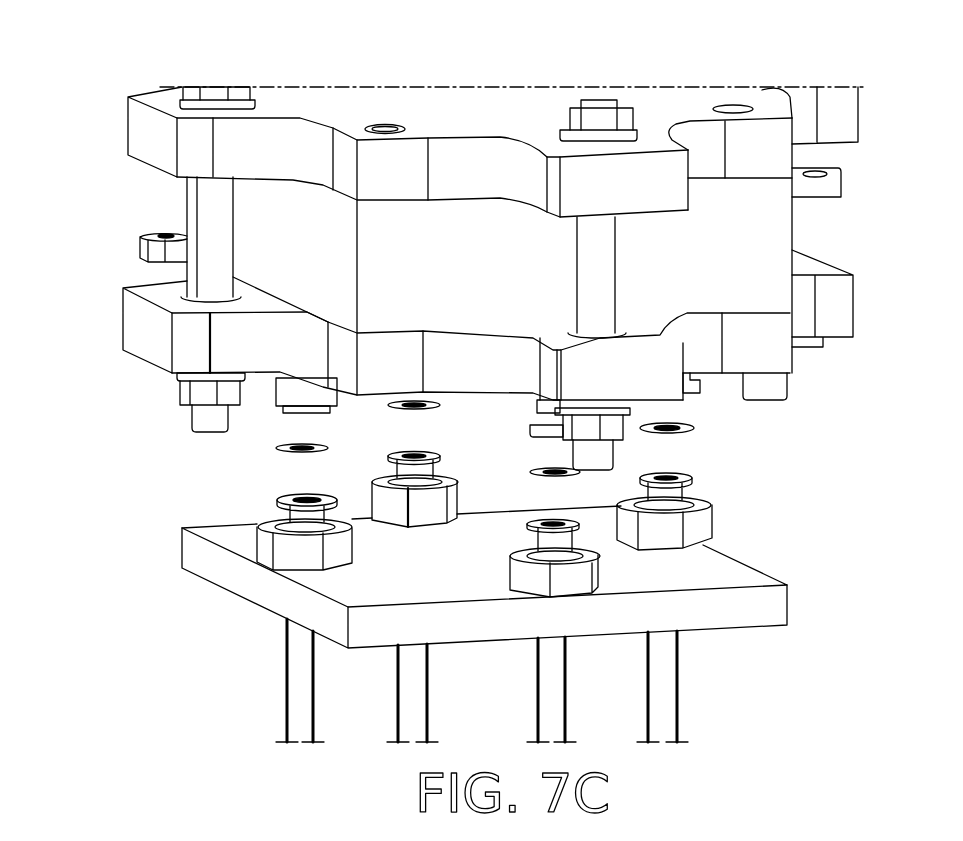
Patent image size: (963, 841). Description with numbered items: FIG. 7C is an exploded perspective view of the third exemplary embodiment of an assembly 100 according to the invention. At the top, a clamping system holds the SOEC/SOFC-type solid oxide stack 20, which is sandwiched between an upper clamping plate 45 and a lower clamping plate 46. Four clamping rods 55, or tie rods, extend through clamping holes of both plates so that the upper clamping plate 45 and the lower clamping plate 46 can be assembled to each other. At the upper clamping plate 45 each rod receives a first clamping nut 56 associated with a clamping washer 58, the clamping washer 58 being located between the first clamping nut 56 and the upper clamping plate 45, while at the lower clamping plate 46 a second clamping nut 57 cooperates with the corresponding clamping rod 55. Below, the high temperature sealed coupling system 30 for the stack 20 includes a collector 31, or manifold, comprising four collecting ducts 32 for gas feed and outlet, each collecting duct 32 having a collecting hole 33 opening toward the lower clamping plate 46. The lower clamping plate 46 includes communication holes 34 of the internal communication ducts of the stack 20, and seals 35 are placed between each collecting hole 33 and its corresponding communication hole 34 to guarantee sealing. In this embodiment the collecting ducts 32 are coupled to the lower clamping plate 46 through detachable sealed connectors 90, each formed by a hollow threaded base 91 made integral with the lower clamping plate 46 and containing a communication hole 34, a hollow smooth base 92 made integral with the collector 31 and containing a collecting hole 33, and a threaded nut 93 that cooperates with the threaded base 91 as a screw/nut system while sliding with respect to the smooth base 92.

The assembly 100 is at (100, 74).
The SOEC/SOFC-type solid oxide stack 20 is at (213, 223).
The high temperature sealed coupling system 30 is at (152, 530).
The collector 31 is at (248, 588).
The collecting ducts 32 is at (410, 723).
The collecting hole 33 is at (283, 498).
The communication holes 34 is at (343, 410).
The seals 35 is at (277, 447).
The upper clamping plate 45 is at (140, 133).
The lower clamping plate 46 is at (133, 302).
The clamping rods 55 is at (257, 200).
The first clamping nut 56 is at (213, 90).
The second clamping nut 57 is at (193, 392).
The clamping washer 58 is at (182, 378).
The detachable sealed connectors 90 is at (190, 485).
The threaded base 91 is at (277, 383).
The smooth base 92 is at (313, 517).
The threaded nut 93 is at (262, 542).